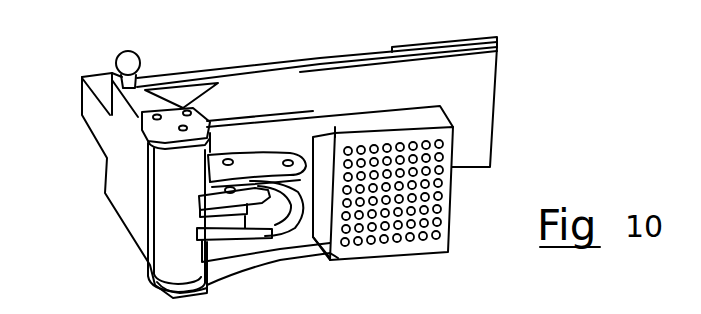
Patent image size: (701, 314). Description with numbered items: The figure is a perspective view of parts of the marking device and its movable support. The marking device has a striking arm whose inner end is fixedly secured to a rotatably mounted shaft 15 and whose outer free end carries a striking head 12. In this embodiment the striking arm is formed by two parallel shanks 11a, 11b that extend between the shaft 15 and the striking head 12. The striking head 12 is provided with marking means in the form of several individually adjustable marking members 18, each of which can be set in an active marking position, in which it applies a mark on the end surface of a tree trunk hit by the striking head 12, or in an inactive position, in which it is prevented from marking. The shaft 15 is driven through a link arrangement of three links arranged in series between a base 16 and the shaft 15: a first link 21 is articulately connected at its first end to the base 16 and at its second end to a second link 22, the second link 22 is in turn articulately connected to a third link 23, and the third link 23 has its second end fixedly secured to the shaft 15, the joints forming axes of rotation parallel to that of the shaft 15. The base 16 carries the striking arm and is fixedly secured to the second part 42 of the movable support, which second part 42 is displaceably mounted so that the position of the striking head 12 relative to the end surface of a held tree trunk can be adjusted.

The shank 11a is at (280, 247).
The shank 11b is at (280, 121).
The striking head 12 is at (447, 185).
The shaft 15 is at (172, 227).
The base 16 is at (107, 157).
The marking member 18 is at (434, 223).
The first link 21 is at (248, 157).
The second link 22 is at (262, 220).
The third link 23 is at (233, 222).
The second part 42 is at (485, 84).